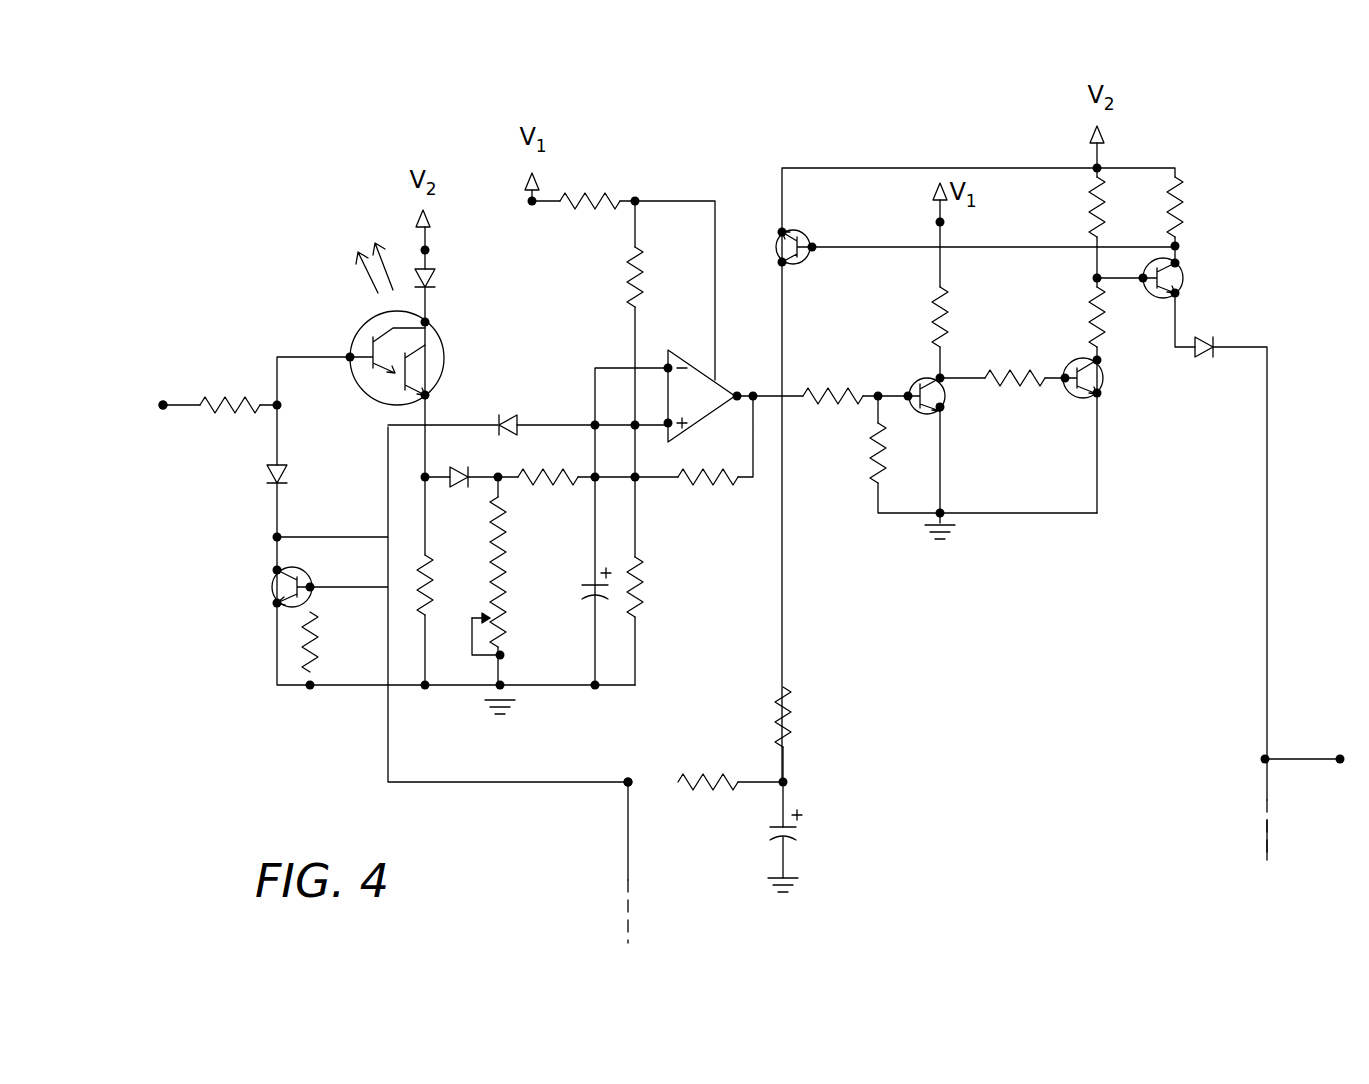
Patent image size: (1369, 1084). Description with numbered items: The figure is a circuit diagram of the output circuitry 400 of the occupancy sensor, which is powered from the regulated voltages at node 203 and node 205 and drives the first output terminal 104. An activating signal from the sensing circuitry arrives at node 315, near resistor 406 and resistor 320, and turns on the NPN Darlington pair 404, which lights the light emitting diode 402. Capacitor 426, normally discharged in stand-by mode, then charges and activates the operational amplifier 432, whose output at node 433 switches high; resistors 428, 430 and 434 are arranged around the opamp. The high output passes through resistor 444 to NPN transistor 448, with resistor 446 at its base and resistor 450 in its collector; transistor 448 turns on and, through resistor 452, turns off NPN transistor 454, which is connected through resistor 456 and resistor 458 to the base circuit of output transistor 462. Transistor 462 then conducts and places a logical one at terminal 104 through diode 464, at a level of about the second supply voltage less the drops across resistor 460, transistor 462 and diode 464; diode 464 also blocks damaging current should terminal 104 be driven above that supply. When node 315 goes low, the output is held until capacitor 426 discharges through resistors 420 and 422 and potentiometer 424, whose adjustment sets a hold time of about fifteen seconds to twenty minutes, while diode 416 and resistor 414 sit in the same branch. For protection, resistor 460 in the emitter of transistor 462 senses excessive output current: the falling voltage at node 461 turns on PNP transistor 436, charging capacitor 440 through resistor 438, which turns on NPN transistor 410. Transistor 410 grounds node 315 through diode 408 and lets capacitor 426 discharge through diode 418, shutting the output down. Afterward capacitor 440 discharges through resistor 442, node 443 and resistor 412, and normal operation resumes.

The first output terminal 104 is at (1340, 759).
The node 203 is at (532, 201).
The node 205 is at (430, 250).
The node 315 is at (163, 405).
The resistor 320 is at (596, 196).
The output circuitry 400 is at (1261, 154).
The light emitting diode 402 is at (438, 280).
The NPN Darlington pair 404 is at (440, 345).
The resistor 406 is at (242, 401).
The diode 408 is at (265, 474).
The NPN transistor 410 is at (272, 587).
The resistor 412 is at (318, 637).
The resistor 414 is at (430, 585).
The diode 416 is at (460, 488).
The diode 418 is at (510, 413).
The resistor 420 is at (564, 476).
The resistor 422 is at (508, 515).
The potentiometer 424 is at (510, 625).
The capacitor 426 is at (588, 588).
The resistor 428 is at (643, 593).
The resistor 430 is at (708, 487).
The operational amplifier 432 is at (712, 412).
The node 433 is at (753, 385).
The resistor 434 is at (644, 277).
The PNP transistor 436 is at (805, 234).
The resistor 438 is at (791, 723).
The capacitor 440 is at (773, 835).
The resistor 442 is at (710, 775).
The node 443 is at (625, 790).
The resistor 444 is at (834, 389).
The resistor 446 is at (873, 456).
The NPN transistor 448 is at (945, 408).
The resistor 450 is at (936, 300).
The resistor 452 is at (1019, 368).
The NPN transistor 454 is at (1103, 398).
The resistor 456 is at (1088, 310).
The resistor 458 is at (1088, 220).
The resistor 460 is at (1185, 210).
The node 461 is at (1180, 248).
The output transistor 462 is at (1183, 285).
The diode 464 is at (1200, 358).